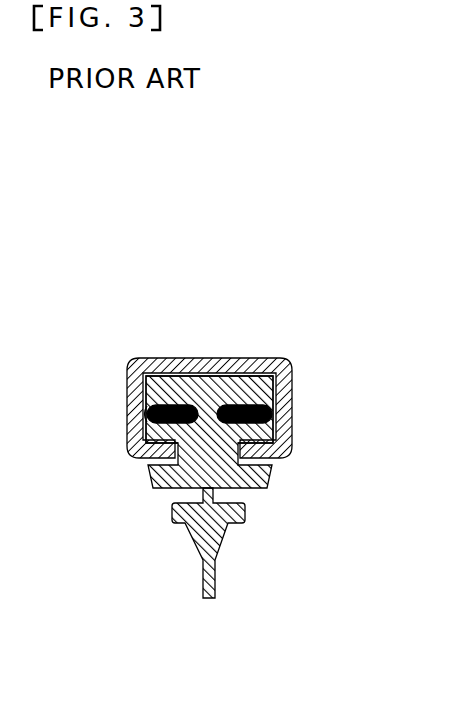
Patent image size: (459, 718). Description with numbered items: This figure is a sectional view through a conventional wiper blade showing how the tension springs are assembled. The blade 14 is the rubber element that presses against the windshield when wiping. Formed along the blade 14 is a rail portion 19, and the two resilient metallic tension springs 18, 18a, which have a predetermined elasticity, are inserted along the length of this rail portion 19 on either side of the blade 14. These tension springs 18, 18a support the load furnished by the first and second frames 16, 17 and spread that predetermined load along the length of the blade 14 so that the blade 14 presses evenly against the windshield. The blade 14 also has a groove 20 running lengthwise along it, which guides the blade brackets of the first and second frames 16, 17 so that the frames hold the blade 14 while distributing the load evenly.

The blade 14 is at (203, 387).
The first frame 16 is at (182, 353).
The second frame 17 is at (138, 358).
The tension spring 18 is at (274, 415).
The tension spring 18a is at (147, 414).
The rail portion 19 is at (143, 376).
The groove 20 is at (267, 457).